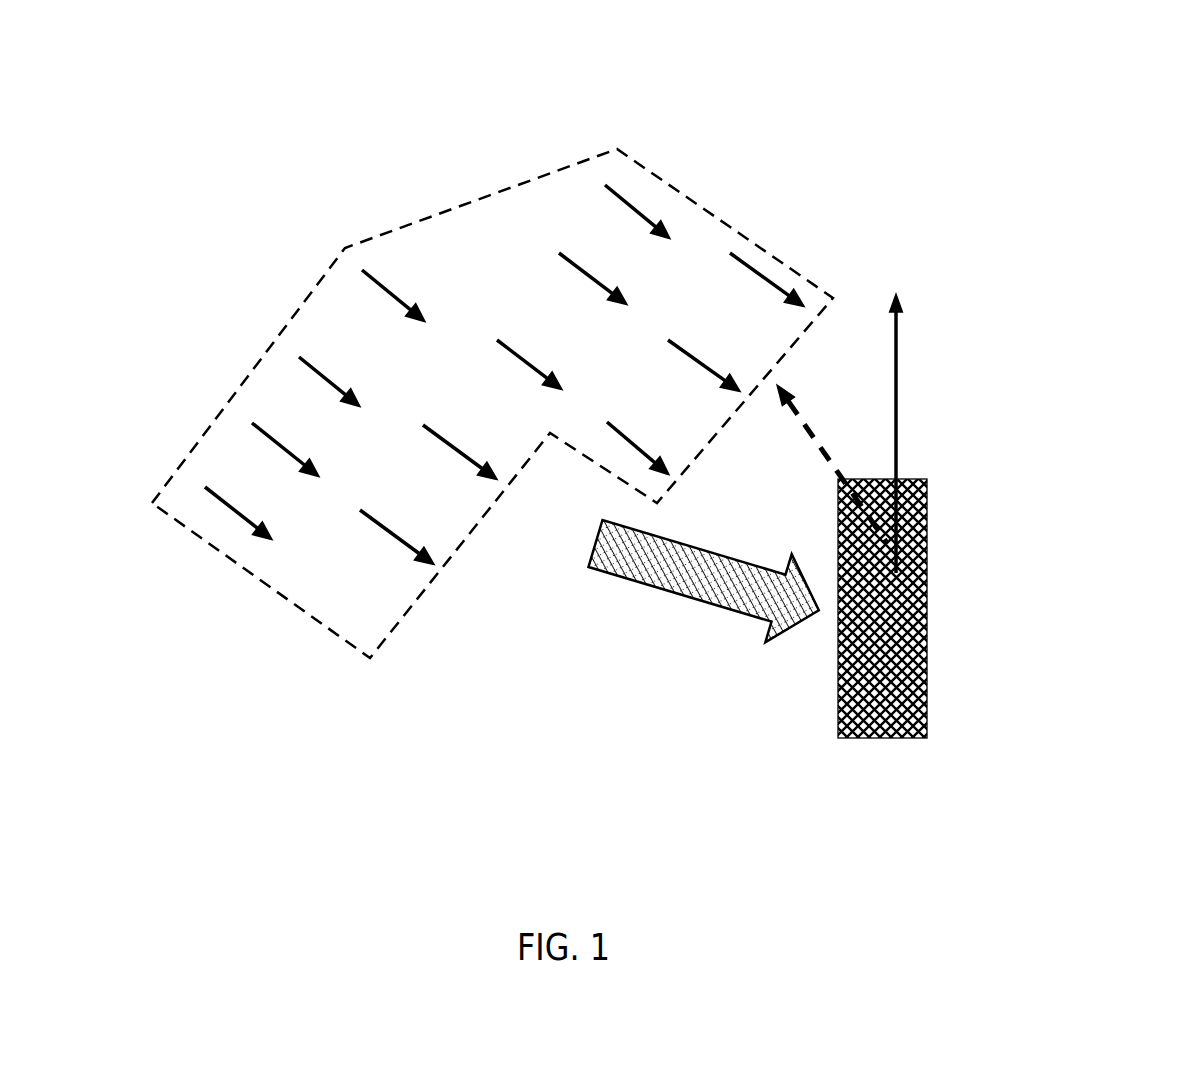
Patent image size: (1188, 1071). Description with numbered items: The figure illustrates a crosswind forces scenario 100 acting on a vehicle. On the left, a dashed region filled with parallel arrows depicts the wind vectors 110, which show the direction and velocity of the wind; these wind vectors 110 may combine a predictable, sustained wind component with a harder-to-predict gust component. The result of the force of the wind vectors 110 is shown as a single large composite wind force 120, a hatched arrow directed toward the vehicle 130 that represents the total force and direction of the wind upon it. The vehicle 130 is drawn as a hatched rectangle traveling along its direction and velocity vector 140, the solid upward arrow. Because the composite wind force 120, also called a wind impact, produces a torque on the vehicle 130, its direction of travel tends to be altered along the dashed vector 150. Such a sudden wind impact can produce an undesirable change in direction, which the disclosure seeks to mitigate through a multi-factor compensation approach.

The crosswind forces scenario 100 is at (1155, 64).
The wind vectors 110 is at (413, 602).
The composite wind force 120 is at (618, 577).
The vehicle 130 is at (862, 738).
The direction and velocity vector 140 is at (896, 352).
The vector 150 is at (810, 437).